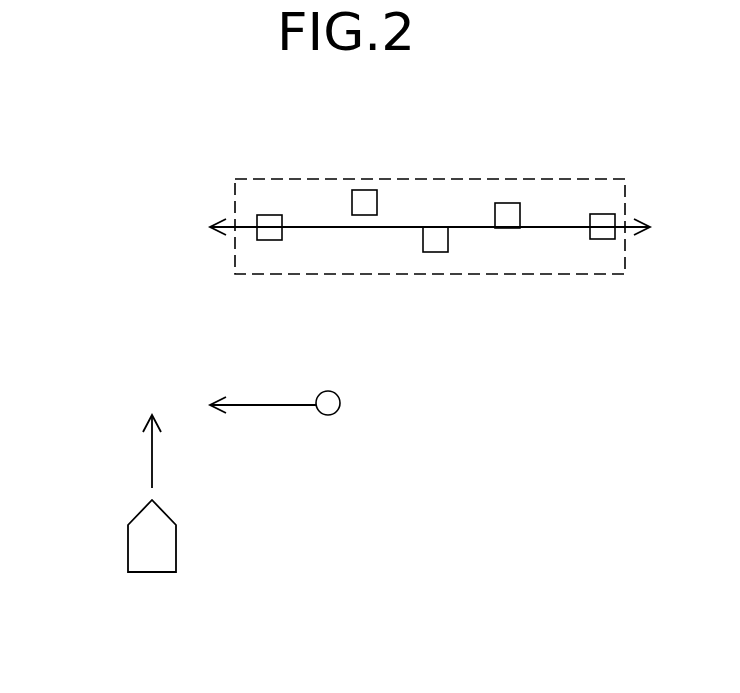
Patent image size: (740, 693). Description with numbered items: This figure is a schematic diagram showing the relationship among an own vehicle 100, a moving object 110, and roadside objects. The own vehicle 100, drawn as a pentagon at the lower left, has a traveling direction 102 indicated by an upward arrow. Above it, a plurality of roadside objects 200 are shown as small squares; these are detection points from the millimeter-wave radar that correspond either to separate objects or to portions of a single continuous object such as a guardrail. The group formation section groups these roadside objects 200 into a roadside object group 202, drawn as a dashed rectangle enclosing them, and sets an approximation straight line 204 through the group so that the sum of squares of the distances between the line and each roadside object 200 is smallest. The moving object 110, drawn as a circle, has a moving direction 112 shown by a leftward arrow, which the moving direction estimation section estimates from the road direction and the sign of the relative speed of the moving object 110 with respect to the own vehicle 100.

The own vehicle 100 is at (156, 573).
The traveling direction 102 is at (151, 451).
The moving object 110 is at (328, 416).
The moving direction 112 is at (268, 407).
The roadside objects 200 is at (503, 202).
The roadside object group 202 is at (575, 178).
The approximation straight line 204 is at (316, 226).